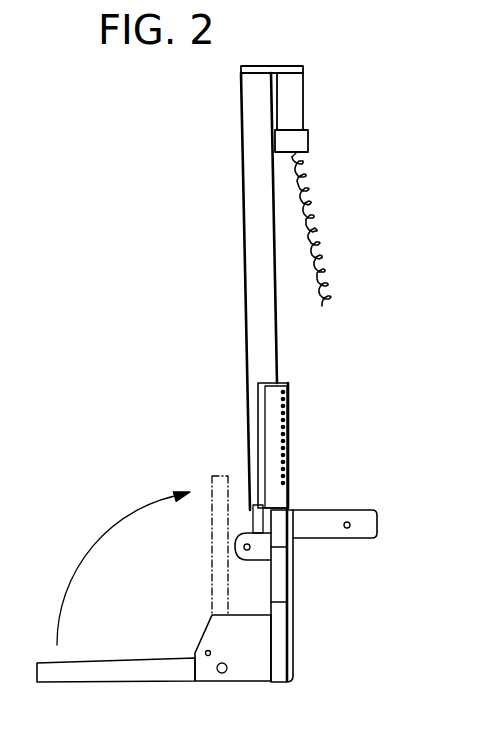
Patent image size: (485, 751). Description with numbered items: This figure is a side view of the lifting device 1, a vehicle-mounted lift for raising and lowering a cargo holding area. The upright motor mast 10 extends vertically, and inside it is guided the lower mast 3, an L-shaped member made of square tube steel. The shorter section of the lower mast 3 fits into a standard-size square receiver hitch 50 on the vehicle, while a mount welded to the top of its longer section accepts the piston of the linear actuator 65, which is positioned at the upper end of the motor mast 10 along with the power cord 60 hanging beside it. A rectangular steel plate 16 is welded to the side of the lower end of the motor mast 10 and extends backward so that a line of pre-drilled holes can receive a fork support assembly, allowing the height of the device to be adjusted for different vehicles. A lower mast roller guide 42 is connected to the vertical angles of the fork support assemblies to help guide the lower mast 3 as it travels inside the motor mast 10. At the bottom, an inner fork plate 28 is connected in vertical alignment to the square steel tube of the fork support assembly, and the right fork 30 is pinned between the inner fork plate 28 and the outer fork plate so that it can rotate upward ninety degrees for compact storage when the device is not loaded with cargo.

The lifting device 1 is at (240, 73).
The lower mast 3 is at (257, 520).
The motor mast 10 is at (257, 211).
The rectangular steel plate 16 is at (272, 402).
The inner fork plate 28 is at (248, 670).
The right fork 30 is at (115, 670).
The lower mast roller guide 42 is at (297, 679).
The receiver hitch 50 is at (325, 530).
The power cord 60 is at (312, 207).
The linear actuator 65 is at (297, 87).